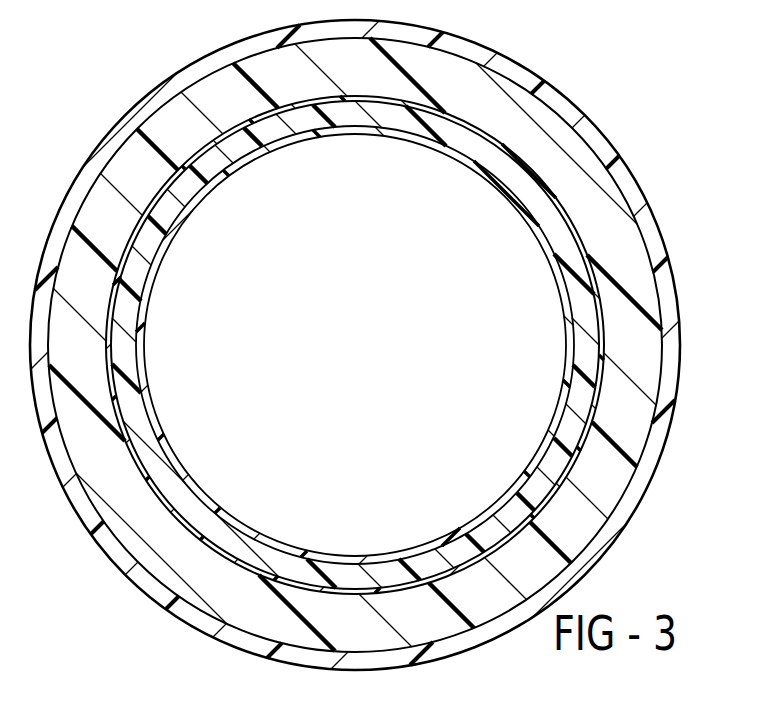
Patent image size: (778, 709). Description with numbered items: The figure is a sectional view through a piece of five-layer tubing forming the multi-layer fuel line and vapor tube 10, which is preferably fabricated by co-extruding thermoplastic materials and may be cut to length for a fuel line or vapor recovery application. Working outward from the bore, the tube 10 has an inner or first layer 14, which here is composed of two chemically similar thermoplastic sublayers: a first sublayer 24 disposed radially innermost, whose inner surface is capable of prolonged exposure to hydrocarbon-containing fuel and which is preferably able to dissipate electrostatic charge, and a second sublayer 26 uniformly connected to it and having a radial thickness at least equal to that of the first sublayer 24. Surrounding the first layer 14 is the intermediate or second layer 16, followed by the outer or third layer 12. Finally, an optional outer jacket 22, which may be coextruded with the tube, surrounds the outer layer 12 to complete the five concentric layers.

The multi-layer fuel line and vapor tube 10 is at (636, 66).
The outer or third layer 12 is at (593, 163).
The inner or first layer 14 is at (548, 243).
The intermediate or second layer 16 is at (593, 248).
The outer jacket 22 is at (680, 403).
The first sublayer 24 is at (490, 503).
The second sublayer 26 is at (583, 350).